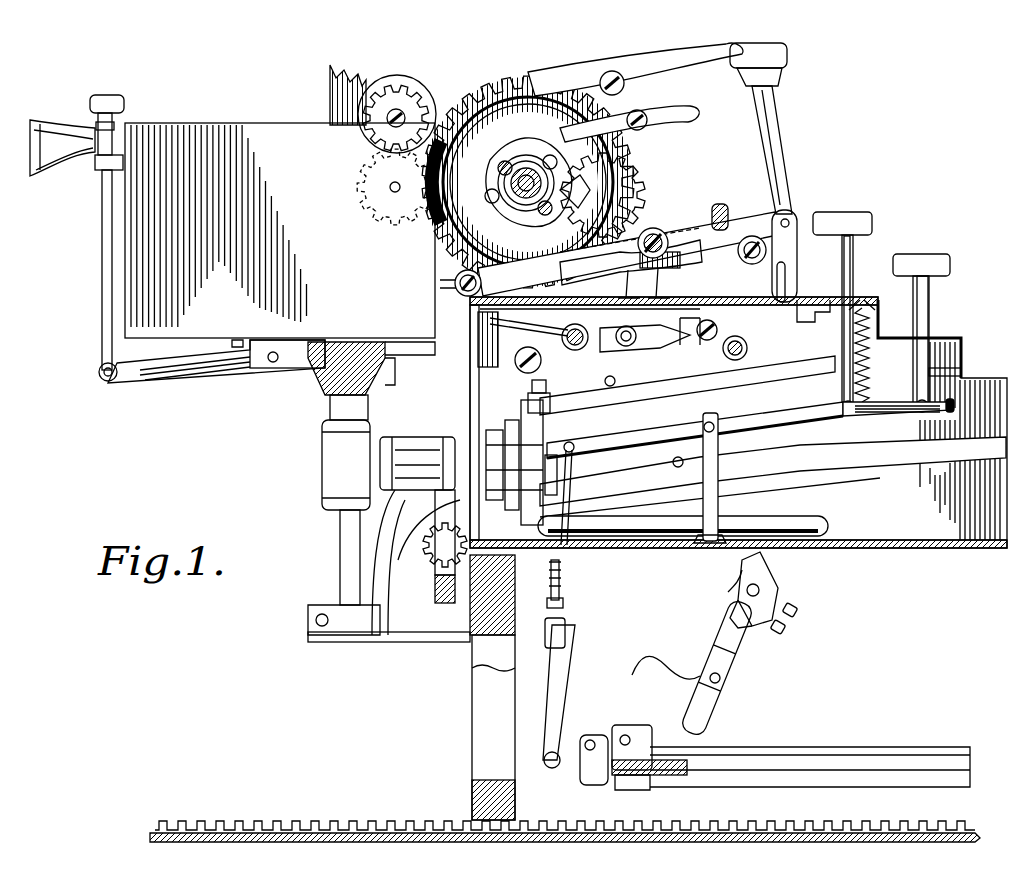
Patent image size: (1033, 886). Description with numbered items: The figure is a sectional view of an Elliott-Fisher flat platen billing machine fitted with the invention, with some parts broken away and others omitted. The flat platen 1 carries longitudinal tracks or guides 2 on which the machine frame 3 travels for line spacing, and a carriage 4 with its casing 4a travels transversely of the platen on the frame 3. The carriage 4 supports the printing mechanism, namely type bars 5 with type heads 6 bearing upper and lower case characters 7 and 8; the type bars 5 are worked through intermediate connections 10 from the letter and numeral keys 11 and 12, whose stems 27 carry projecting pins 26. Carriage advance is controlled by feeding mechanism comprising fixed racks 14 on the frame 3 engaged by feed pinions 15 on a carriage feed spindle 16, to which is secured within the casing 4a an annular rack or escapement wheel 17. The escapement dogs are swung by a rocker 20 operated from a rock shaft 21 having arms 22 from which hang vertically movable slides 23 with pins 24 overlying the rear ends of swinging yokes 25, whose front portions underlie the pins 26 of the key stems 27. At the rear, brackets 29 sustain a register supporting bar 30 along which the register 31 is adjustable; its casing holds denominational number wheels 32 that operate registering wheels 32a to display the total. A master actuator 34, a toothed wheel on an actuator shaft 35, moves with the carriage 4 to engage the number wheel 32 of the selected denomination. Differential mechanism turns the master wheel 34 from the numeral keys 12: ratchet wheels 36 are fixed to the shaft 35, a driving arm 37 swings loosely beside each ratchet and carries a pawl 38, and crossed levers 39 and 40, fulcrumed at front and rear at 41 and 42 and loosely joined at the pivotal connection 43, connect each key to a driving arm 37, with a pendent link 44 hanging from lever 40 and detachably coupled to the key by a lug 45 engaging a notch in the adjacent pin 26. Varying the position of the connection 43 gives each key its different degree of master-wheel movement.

The flat platen 1 is at (150, 838).
The longitudinal tracks or guides 2 is at (266, 823).
The machine frame 3 is at (472, 718).
The carriage 4 is at (908, 550).
The casing of the carriage 4a is at (947, 337).
The type bars 5 is at (726, 673).
The type heads 6 is at (776, 602).
The upper case character 7 is at (779, 635).
The lower case character 8 is at (797, 613).
The intermediate connections 10 is at (575, 642).
The letter keys 11 is at (940, 262).
The numeral keys 12 is at (877, 207).
The fixed racks 14 is at (436, 585).
The feed pinions 15 is at (437, 560).
The carriage feed spindle 16 is at (779, 524).
The annular rack or escapement wheel 17 is at (566, 500).
The rocker 20 is at (540, 428).
The rock shaft 21 is at (617, 337).
The arms 22 is at (582, 333).
The slides 23 is at (550, 400).
The pins 24 is at (545, 386).
The swinging yokes 25 is at (732, 372).
The pins 26 is at (830, 302).
The stems 27 is at (852, 265).
The brackets 29 is at (395, 632).
The register supporting bar 30 is at (310, 366).
The register 31 is at (280, 201).
The number wheels 32 is at (375, 190).
The registering wheels 32a is at (374, 119).
The master actuator 34 is at (545, 105).
The actuator shaft 35 is at (528, 172).
The ratchet wheels 36 is at (628, 186).
The driving arm 37 is at (478, 114).
The pawl 38 is at (492, 100).
The lever 39 is at (697, 258).
The lever 40 is at (693, 232).
The fulcrum 41 is at (752, 238).
The fulcrum 42 is at (452, 289).
The pivotal connection 43 is at (655, 235).
The pendent link 44 is at (790, 262).
The lug 45 is at (803, 298).